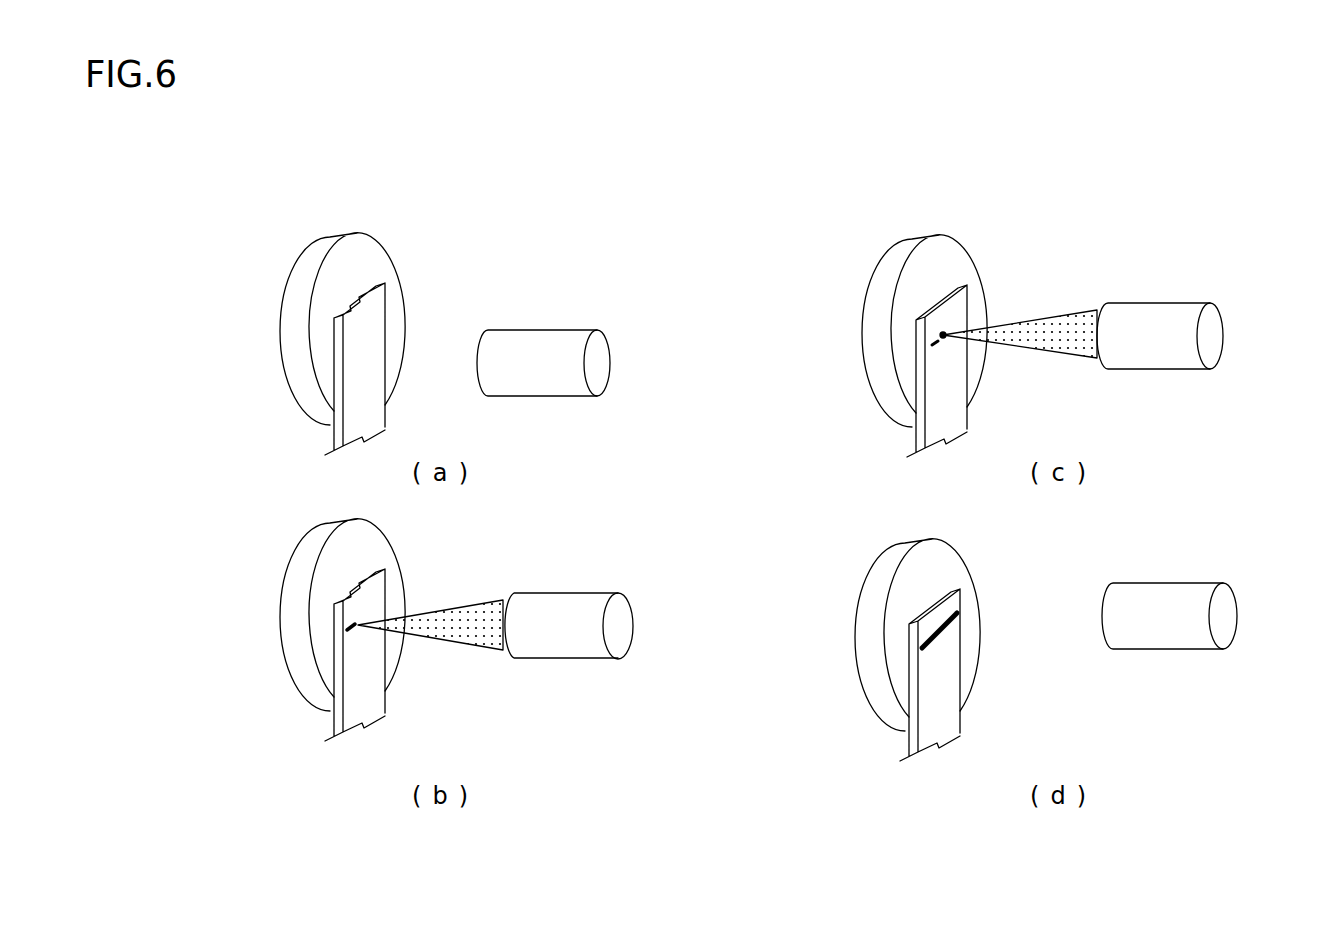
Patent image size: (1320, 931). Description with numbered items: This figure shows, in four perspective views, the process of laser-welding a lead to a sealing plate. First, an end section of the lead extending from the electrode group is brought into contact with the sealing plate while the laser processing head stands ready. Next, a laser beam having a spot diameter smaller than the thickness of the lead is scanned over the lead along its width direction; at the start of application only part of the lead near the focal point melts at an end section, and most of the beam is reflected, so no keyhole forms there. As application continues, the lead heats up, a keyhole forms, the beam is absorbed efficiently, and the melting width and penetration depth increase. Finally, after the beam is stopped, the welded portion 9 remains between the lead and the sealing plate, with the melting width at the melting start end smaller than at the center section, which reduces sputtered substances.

The welded portion 9 is at (957, 645).